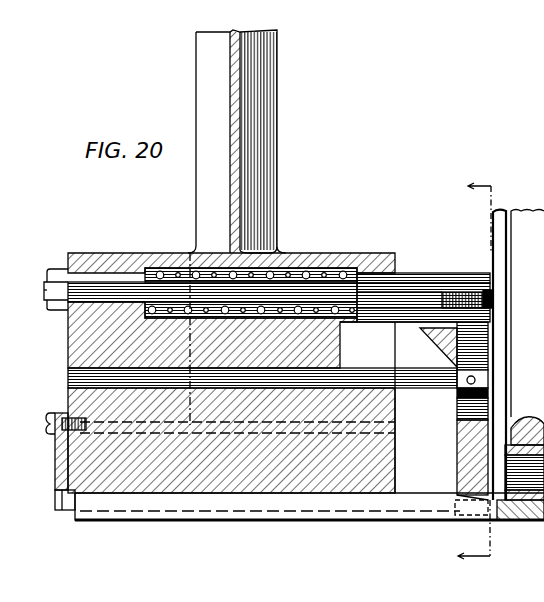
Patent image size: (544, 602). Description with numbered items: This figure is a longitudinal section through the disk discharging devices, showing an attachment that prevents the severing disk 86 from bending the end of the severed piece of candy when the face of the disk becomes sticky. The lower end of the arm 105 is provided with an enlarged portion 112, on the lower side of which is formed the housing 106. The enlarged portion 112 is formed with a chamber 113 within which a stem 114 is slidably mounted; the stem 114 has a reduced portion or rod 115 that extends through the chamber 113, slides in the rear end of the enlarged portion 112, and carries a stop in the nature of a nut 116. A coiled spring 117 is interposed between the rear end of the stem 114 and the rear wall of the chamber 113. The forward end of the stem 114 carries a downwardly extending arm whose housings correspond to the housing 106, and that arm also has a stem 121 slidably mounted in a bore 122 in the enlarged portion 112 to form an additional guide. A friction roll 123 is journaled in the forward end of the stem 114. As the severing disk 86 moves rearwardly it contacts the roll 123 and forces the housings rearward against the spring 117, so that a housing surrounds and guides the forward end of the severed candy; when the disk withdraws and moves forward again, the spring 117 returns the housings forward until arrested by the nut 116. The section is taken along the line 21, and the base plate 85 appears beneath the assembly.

The arm 105 is at (233, 72).
The enlarged portion 112 is at (318, 262).
The chamber 113 is at (353, 277).
The stem 114 is at (403, 287).
The rod 115 is at (128, 290).
The nut 116 is at (60, 275).
The coiled spring 117 is at (272, 270).
The stem 121 is at (434, 398).
The bore 122 is at (68, 360).
The friction roll 123 is at (462, 296).
The housing 106 is at (72, 507).
The base plate 85 is at (412, 513).
The severing disk 86 is at (494, 216).
The section line 21 is at (478, 374).